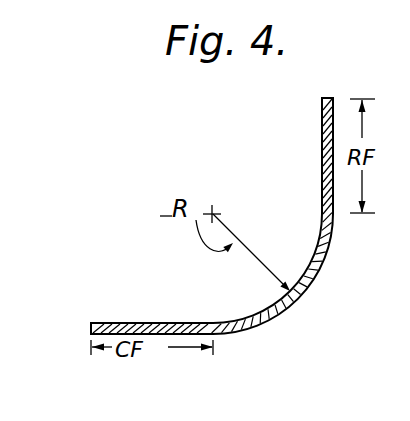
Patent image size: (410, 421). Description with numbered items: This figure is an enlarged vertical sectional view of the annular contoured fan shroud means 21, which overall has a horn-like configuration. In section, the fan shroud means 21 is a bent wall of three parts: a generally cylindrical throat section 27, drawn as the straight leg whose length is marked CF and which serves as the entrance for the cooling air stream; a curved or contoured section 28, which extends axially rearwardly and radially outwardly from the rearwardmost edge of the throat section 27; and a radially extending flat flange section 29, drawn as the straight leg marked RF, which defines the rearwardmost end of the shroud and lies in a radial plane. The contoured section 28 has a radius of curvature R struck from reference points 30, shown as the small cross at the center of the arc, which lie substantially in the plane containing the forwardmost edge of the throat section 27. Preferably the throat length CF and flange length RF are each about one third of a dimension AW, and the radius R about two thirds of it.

The fan shroud means 21 is at (226, 259).
The cylindrical throat section 27 is at (168, 280).
The curved or contoured section 28 is at (290, 302).
The radially extending flat flange section 29 is at (322, 105).
The reference points 30 is at (212, 211).